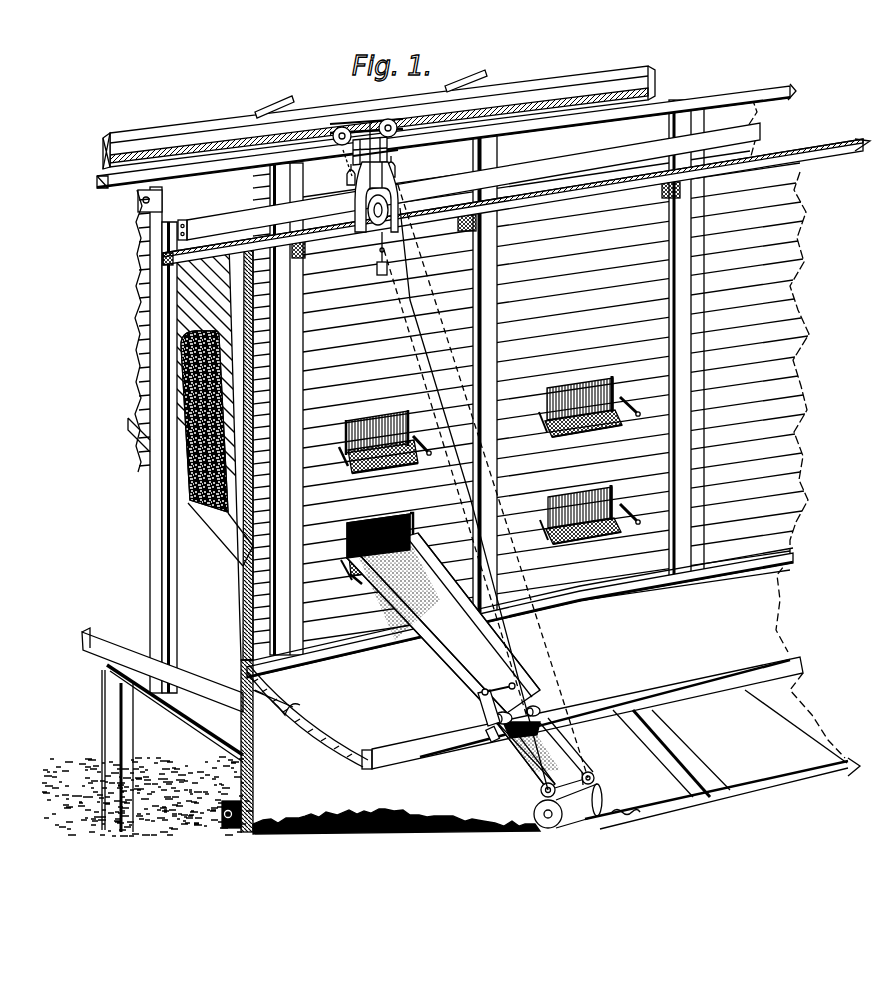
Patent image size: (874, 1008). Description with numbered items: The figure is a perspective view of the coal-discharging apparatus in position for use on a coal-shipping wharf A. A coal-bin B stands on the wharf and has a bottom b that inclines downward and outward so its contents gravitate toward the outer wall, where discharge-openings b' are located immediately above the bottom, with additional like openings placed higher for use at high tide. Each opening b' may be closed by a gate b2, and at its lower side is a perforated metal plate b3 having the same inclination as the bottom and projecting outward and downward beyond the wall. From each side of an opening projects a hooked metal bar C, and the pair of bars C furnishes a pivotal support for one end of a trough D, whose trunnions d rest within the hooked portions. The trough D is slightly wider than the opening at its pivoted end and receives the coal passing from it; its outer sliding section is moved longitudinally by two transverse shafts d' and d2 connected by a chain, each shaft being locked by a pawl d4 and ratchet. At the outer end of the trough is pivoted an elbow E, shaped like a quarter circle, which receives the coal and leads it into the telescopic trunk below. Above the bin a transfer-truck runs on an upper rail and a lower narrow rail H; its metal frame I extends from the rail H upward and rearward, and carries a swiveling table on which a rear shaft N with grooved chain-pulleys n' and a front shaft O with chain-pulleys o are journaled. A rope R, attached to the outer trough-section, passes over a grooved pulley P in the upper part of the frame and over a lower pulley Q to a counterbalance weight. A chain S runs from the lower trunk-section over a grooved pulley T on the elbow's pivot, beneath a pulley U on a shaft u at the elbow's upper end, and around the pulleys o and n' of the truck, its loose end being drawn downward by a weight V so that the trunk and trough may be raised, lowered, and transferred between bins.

The coal-shipping wharf A is at (439, 449).
The coal-bin B is at (193, 334).
The narrow rail H is at (176, 258).
The shaft N is at (365, 148).
The grooved chain-pulley n' is at (366, 115).
The shaft O is at (392, 126).
The grooved pulley P is at (392, 152).
The weight V is at (347, 178).
The metal frame I is at (355, 206).
The grooved pulley Q is at (399, 205).
The rope R is at (381, 241).
The chain S is at (441, 329).
The grooved chain-pulley o is at (343, 150).
The discharge-opening b' is at (494, 474).
The gate b2 is at (346, 430).
The perforated metal plate b3 is at (384, 462).
The metal bar C is at (341, 457).
The bottom b is at (220, 534).
The trunnion d is at (346, 582).
The trough D is at (388, 598).
The shaft d' is at (501, 706).
The shaft d2 is at (489, 688).
The pawl d4 is at (490, 740).
The shaft u is at (544, 785).
The grooved pulley U is at (541, 792).
The grooved pulley T is at (542, 814).
The elbow E is at (550, 691).